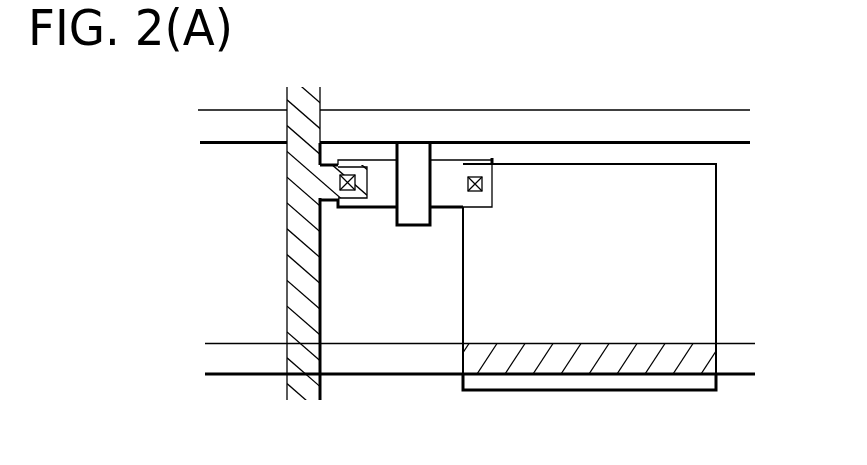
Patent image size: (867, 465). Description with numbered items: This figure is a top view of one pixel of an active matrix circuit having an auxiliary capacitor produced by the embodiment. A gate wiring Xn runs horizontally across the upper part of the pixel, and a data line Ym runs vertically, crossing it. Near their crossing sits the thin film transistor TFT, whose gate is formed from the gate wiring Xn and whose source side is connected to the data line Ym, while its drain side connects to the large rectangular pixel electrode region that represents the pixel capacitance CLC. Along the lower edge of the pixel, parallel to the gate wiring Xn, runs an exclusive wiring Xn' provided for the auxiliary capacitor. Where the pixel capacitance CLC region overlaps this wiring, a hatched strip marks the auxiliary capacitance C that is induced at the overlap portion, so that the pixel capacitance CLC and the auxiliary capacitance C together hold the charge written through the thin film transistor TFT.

The gate wiring Xn is at (437, 138).
The exclusive wiring for the auxiliary capacitor Xn' is at (440, 371).
The data line Ym is at (290, 282).
The thin film transistor TFT is at (488, 150).
The pixel capacitance CLC is at (703, 230).
The auxiliary capacitance C is at (538, 357).